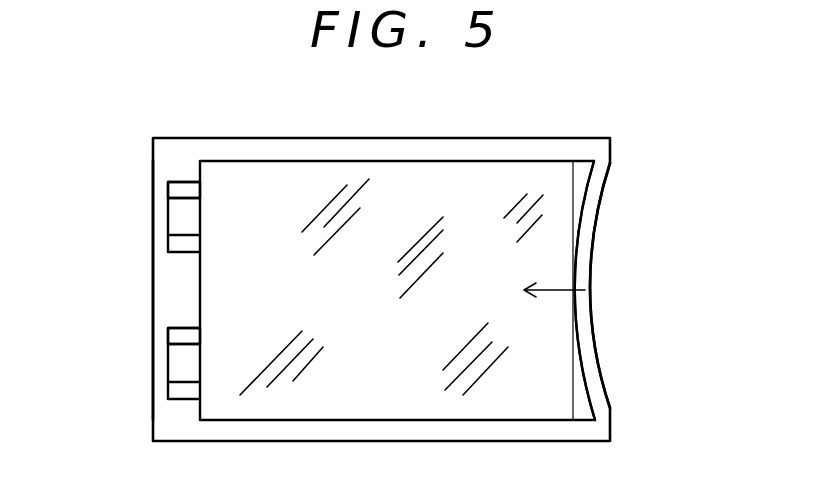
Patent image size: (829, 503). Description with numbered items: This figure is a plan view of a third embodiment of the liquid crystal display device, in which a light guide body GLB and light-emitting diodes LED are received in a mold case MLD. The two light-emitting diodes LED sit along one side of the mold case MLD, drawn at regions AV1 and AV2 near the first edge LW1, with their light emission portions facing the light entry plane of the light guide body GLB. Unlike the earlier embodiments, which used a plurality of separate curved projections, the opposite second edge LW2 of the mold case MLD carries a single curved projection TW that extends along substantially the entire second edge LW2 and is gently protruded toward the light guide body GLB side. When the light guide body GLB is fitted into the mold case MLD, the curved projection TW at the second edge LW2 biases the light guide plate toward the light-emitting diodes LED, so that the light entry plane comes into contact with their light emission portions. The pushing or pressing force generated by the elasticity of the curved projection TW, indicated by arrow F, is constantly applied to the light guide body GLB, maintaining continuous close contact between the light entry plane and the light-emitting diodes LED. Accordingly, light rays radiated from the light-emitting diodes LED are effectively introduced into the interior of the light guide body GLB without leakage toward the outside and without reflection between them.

The mold case MLD is at (215, 140).
The light guide body GLB is at (432, 177).
The light-emitting diode LED is at (175, 210).
The first light emitting region AV1 is at (178, 185).
The second light emitting region AV2 is at (177, 338).
The first side wall LW1 is at (145, 283).
The second edge LW2 is at (607, 218).
The curved projection TW is at (597, 288).
The arrow indicating pushing/pressing force F is at (544, 290).